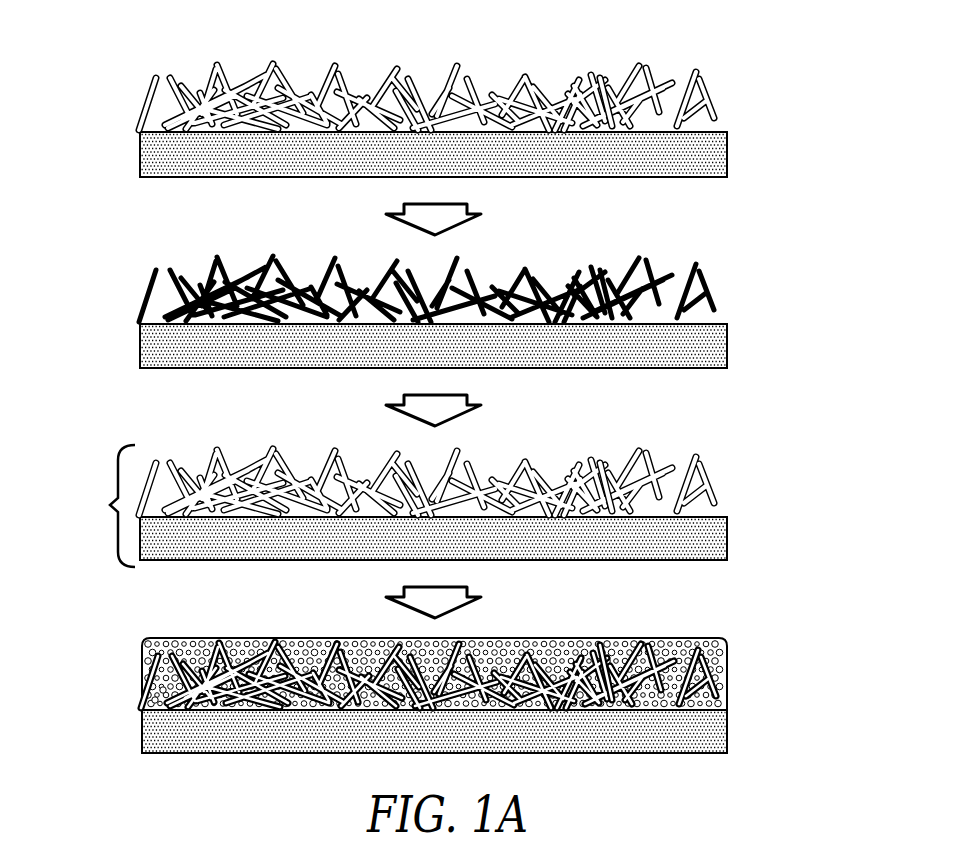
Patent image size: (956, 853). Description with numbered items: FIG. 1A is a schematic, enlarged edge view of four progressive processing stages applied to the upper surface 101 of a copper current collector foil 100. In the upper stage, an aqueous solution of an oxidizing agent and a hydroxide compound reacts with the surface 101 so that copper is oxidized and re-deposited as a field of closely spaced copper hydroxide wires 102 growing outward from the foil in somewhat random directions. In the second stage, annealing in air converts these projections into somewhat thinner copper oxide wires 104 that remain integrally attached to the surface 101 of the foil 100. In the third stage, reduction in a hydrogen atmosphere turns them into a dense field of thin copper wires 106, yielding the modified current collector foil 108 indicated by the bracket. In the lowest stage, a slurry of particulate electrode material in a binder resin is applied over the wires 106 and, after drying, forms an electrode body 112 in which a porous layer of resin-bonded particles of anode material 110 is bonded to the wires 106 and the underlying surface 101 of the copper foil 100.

The copper current collector foil 100 is at (727, 155).
The surface of the current collector 101 is at (690, 130).
The copper hydroxide wires 102 is at (638, 76).
The copper oxide wires 104 is at (637, 268).
The copper wires 106 is at (638, 640).
The modified current collector foil 108 is at (108, 505).
The particulate anode material 110 is at (727, 695).
The electrode body 112 is at (128, 682).